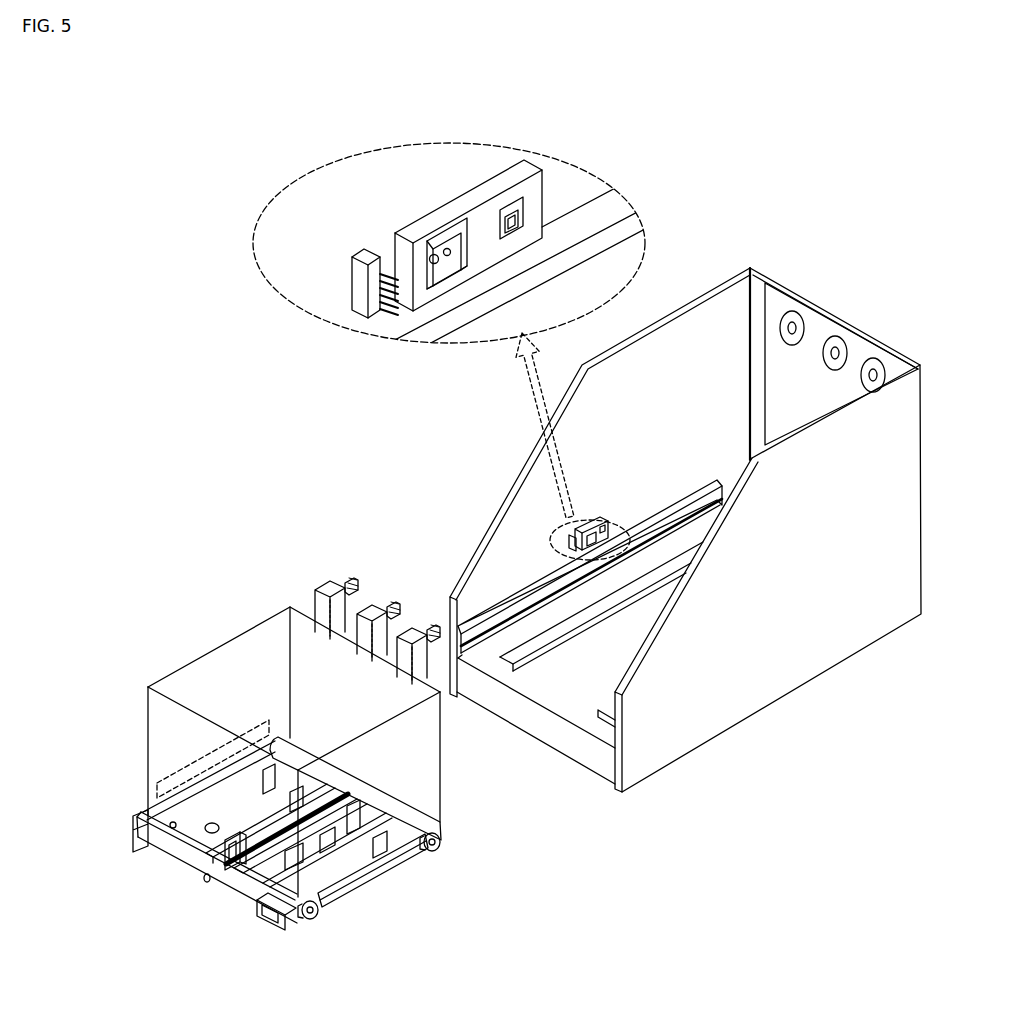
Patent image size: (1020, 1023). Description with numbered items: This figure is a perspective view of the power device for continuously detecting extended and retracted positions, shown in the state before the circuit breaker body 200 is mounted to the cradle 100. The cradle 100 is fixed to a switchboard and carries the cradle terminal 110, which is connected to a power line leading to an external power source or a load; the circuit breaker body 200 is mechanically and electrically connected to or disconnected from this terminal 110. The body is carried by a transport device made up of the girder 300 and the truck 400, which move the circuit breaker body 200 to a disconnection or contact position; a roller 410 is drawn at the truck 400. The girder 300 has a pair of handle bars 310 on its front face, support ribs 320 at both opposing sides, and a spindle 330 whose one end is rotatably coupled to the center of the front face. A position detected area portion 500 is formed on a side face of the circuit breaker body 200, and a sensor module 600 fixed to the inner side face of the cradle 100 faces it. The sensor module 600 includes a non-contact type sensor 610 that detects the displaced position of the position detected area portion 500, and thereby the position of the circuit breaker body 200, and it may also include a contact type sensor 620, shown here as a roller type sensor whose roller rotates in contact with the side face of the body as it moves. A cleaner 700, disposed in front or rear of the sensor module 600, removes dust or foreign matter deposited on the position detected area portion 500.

The cradle 100 is at (800, 685).
The cradle terminal 110 is at (833, 350).
The circuit breaker body 200 is at (239, 654).
The girder 300 is at (209, 888).
The handle bar 310 is at (273, 916).
The support rib 320 is at (306, 920).
The spindle 330 is at (247, 884).
The truck 400 is at (361, 881).
The roller 410 is at (438, 849).
The position detected area portion 500 is at (175, 779).
The sensor module 600 is at (474, 190).
The non-contact type sensor 610 is at (432, 256).
The contact type sensor 620 is at (513, 215).
The cleaner 700 is at (370, 256).